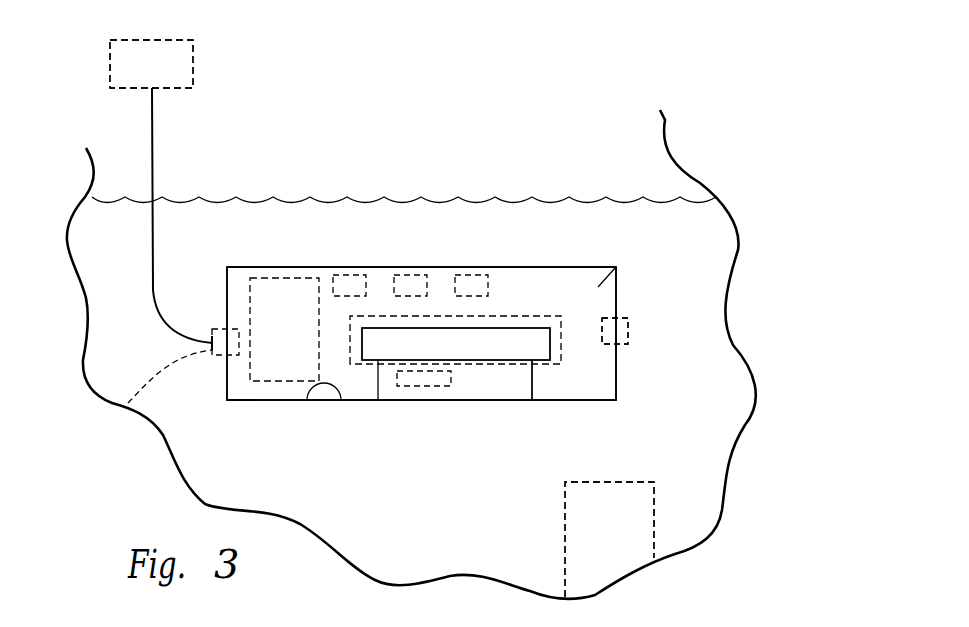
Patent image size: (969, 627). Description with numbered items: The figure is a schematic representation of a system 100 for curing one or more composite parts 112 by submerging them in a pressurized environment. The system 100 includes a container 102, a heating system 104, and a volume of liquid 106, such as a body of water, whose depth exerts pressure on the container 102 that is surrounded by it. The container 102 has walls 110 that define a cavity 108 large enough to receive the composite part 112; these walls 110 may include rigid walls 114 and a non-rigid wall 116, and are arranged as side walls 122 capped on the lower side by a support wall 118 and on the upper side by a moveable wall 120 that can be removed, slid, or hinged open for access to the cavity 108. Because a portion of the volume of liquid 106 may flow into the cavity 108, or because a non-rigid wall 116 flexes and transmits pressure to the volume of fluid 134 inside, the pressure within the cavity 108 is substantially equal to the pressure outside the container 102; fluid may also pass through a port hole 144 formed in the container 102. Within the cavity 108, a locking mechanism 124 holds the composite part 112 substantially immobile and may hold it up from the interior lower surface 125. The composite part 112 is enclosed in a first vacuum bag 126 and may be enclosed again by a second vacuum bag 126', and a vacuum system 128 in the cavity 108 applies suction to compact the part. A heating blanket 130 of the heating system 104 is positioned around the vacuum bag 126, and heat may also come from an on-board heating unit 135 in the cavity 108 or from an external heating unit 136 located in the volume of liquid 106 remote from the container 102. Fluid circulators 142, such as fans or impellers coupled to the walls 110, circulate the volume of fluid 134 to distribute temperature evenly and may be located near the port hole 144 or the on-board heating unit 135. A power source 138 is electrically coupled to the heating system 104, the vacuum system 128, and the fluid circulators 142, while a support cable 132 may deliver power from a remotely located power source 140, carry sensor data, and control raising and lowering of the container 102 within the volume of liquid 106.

The system for curing composite parts 100 is at (613, 83).
The container 102 is at (255, 400).
The heating system 104 is at (262, 278).
The volume of liquid 106 is at (717, 233).
The cavity 108 is at (582, 382).
The walls 110 is at (548, 267).
The composite part 112 is at (478, 345).
The rigid walls 114 is at (227, 292).
The non-rigid wall 116 is at (312, 267).
The support wall 118 is at (353, 402).
The moveable wall 120 is at (282, 266).
The side walls 122 is at (228, 328).
The locking mechanism 124 is at (535, 390).
The interior lower surface 125 is at (303, 400).
The vacuum bag 126 is at (372, 248).
The second vacuum bag 126' is at (543, 248).
The vacuum system 128 is at (418, 386).
The heating blanket 130 is at (557, 316).
The support cable 132 is at (153, 248).
The volume of fluid 134 is at (598, 287).
The on-board heating unit 135 is at (238, 385).
The external heating unit 136 is at (630, 483).
The power source 138 is at (110, 60).
The remotely located power source 140 is at (110, 76).
The fluid circulators 142 is at (478, 243).
The port hole 144 is at (628, 340).